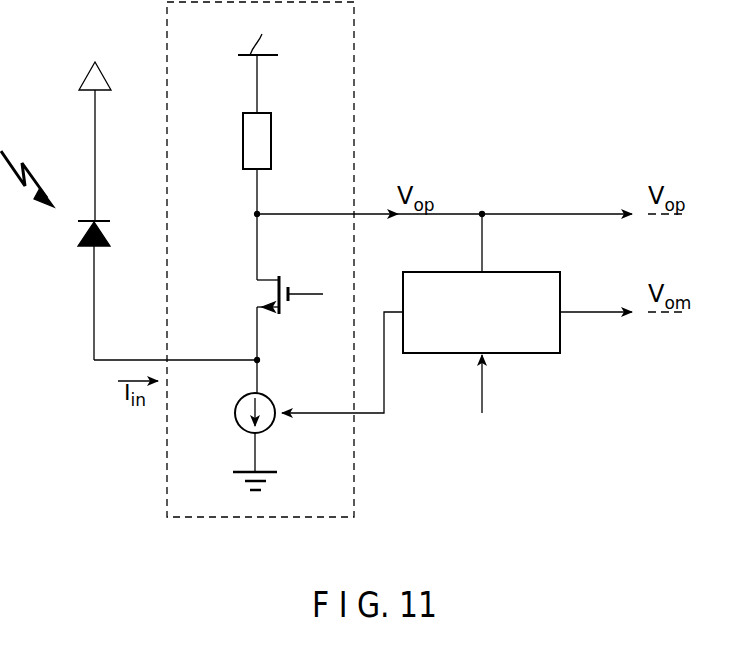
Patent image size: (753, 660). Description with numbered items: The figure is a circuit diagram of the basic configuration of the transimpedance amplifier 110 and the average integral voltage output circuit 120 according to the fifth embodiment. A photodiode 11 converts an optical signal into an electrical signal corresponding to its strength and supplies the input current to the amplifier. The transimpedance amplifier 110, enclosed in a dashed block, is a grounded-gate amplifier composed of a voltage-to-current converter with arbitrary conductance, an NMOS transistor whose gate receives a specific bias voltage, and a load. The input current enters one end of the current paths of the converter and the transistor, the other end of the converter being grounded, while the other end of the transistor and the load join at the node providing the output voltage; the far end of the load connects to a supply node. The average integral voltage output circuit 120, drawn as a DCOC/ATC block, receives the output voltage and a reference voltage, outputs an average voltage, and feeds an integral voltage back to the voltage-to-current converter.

The photodiode 11 is at (108, 234).
The transimpedance amplifier 110 is at (354, 18).
The average integral voltage output circuit 120 is at (560, 338).